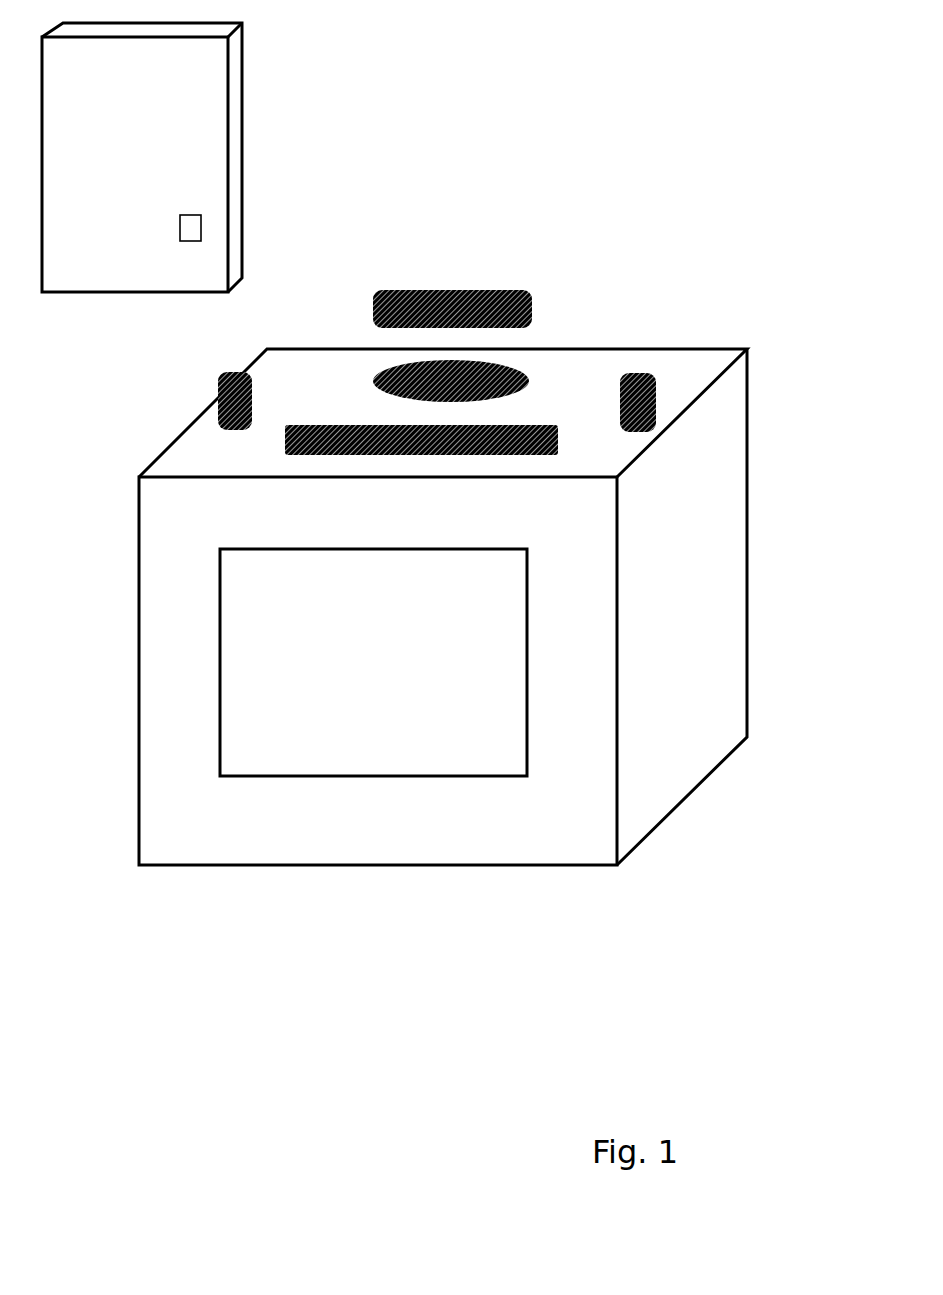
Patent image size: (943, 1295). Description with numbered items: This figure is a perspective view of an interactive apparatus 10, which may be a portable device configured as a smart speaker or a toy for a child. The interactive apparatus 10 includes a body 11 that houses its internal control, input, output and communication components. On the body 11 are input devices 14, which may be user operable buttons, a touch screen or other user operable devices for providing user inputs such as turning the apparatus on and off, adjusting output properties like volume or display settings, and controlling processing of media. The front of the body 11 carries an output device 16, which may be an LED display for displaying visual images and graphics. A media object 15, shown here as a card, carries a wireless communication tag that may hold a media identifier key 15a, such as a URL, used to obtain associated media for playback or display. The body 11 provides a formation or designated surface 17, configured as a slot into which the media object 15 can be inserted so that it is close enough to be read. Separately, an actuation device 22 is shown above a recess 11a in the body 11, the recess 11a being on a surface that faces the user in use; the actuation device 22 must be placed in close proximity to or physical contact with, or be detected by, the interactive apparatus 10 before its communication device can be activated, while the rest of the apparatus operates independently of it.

The interactive apparatus 10 is at (683, 247).
The body 11 is at (745, 541).
The recess 11a is at (523, 376).
The input devices 14 is at (232, 372).
The media object 15 is at (242, 74).
The media identifier key 15a is at (201, 216).
The output device 16 is at (235, 688).
The formation or designated surface 17 is at (545, 425).
The actuation device 22 is at (493, 290).